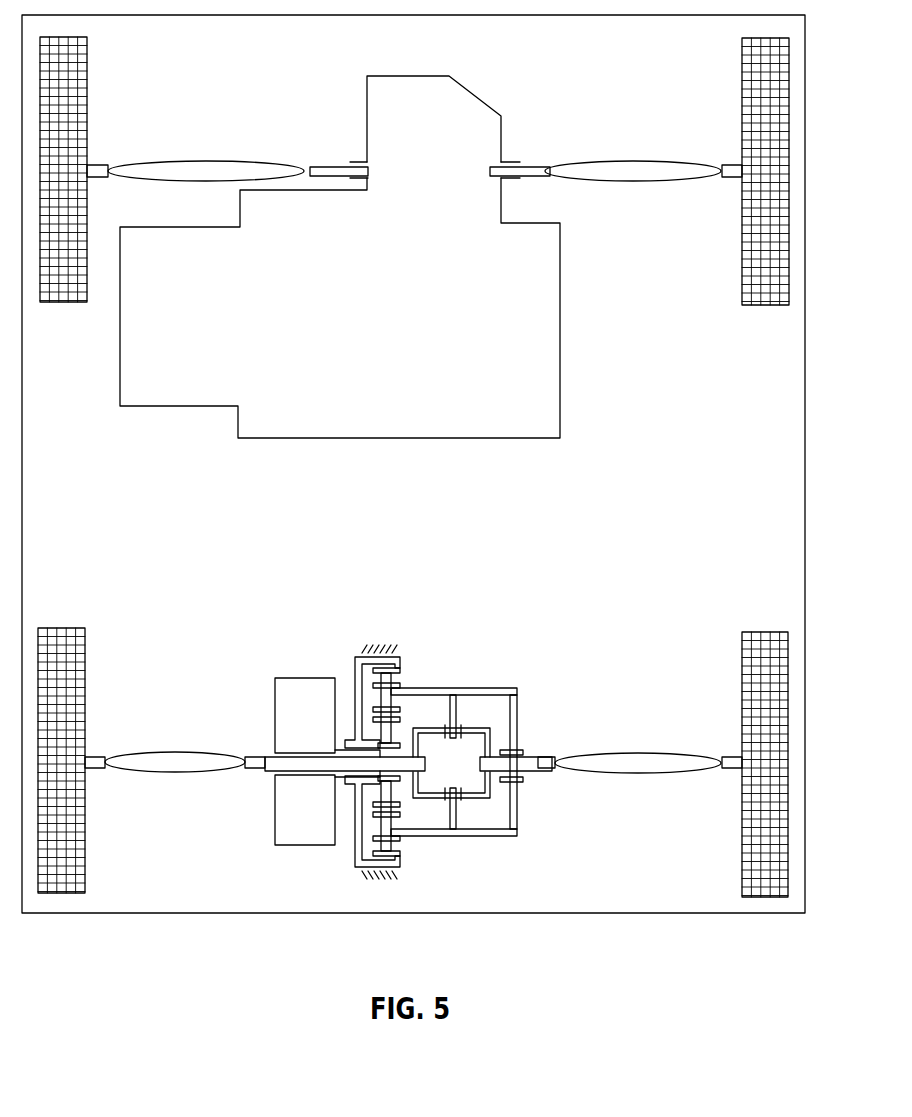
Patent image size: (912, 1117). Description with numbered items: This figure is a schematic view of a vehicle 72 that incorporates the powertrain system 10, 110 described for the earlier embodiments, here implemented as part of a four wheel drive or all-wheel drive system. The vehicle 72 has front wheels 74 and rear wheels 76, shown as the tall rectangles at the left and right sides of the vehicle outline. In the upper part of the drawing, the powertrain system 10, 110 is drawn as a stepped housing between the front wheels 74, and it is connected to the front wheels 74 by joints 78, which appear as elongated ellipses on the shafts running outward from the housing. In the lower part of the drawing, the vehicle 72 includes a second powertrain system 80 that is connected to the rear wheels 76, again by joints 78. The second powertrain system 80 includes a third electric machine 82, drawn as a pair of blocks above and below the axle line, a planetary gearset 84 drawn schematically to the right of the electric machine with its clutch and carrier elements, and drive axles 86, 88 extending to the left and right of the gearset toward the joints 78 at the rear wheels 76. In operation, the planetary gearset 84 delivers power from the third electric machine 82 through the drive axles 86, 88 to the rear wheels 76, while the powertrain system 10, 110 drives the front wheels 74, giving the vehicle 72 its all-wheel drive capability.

The powertrain system 10 is at (345, 291).
The powertrain system 110 is at (480, 440).
The vehicle 72 is at (805, 877).
The front wheels 74 is at (65, 291).
The rear wheels 76 is at (61, 640).
The joints 78 is at (182, 170).
The second powertrain system 80 is at (232, 615).
The third electric machine 82 is at (302, 686).
The planetary gearset 84 is at (460, 678).
The drive axle 86 is at (268, 765).
The drive axle 88 is at (539, 772).